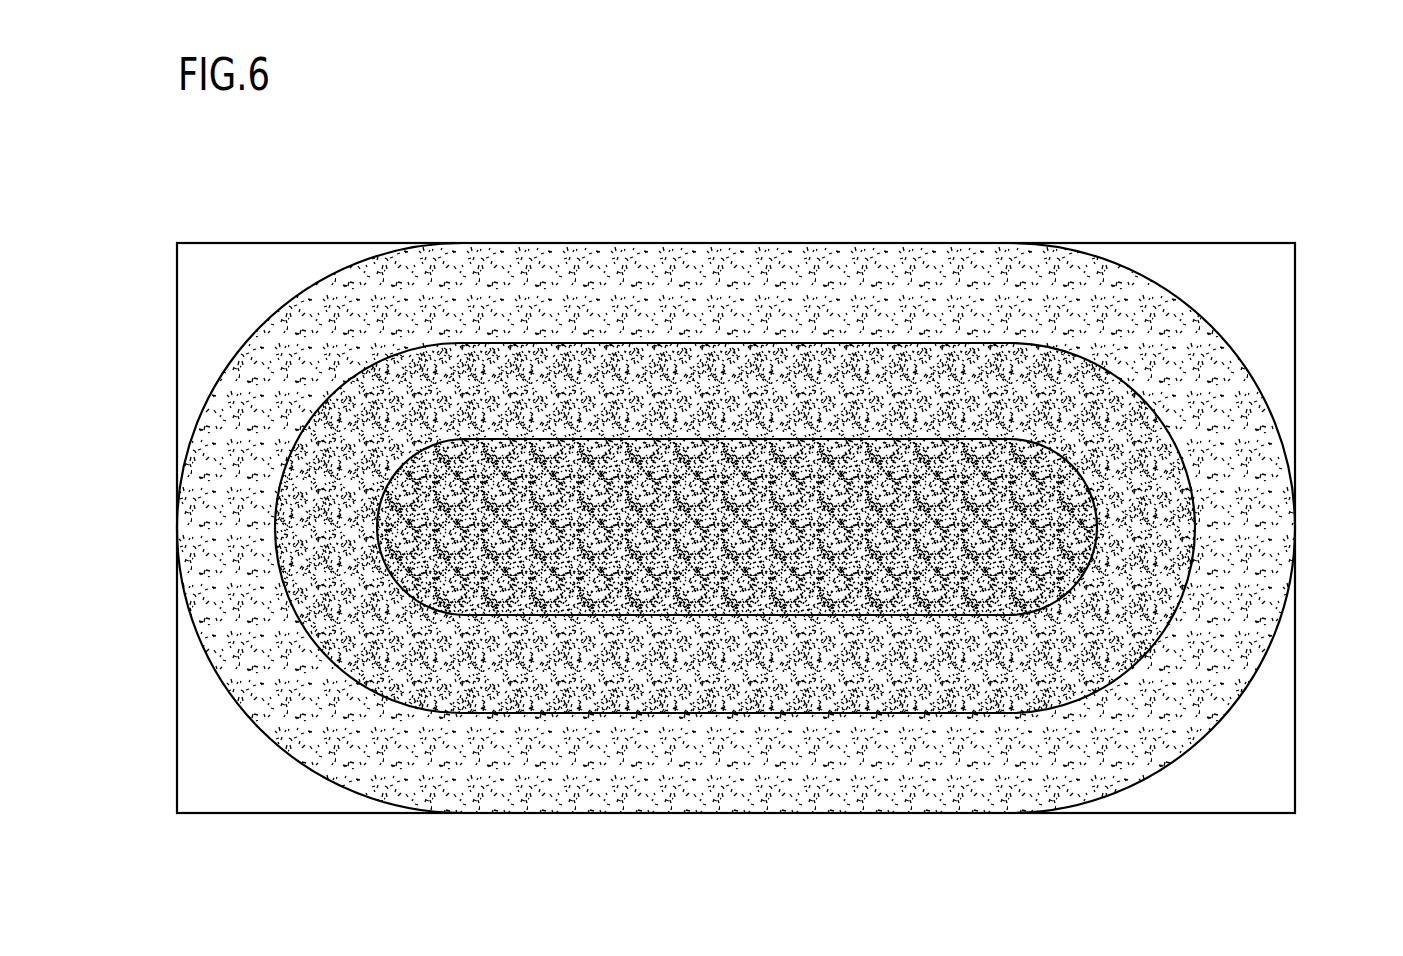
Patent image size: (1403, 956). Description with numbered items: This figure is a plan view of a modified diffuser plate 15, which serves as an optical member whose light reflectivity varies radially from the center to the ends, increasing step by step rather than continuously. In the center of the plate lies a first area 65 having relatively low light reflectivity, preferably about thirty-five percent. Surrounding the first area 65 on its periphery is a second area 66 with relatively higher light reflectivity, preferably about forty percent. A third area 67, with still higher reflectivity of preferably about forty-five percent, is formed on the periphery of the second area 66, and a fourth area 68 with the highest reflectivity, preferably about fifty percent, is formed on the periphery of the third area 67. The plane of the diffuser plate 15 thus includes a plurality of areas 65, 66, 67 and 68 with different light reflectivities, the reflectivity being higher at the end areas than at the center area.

The diffuser plate 15 is at (1133, 218).
The first area 65 is at (1043, 557).
The second area 66 is at (1152, 528).
The third area 67 is at (1248, 410).
The fourth area 68 is at (1248, 292).